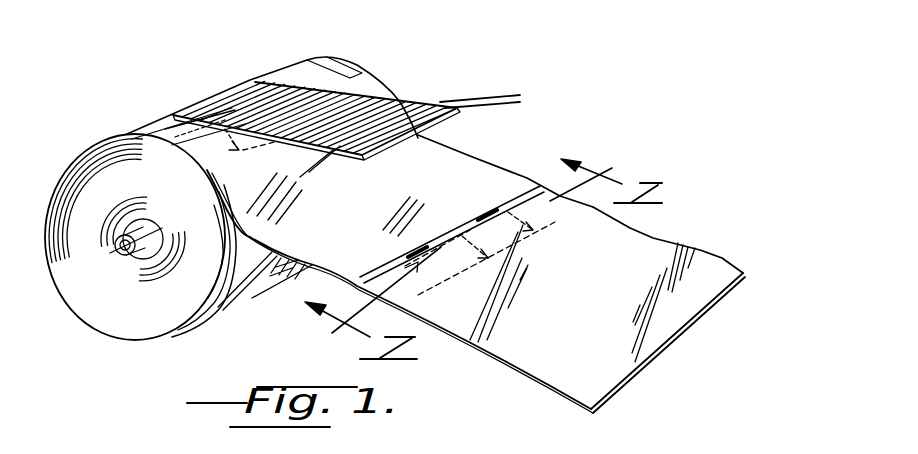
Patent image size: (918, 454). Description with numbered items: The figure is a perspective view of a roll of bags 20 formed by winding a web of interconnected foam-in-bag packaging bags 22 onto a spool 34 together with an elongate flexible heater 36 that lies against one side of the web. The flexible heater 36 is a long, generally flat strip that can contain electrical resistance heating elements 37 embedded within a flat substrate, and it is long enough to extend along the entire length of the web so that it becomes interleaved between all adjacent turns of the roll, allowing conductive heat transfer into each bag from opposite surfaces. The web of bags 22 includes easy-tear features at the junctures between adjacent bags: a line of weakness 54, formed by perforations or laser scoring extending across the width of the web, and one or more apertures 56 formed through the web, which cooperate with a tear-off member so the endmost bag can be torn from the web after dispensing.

The roll of bags 20 is at (494, 72).
The bag 22 is at (477, 173).
The spool 34 is at (154, 233).
The flexible heater 36 is at (403, 103).
The electrical resistance heating elements 37 is at (502, 96).
The line of weakness 54 is at (372, 273).
The apertures 56 is at (487, 210).